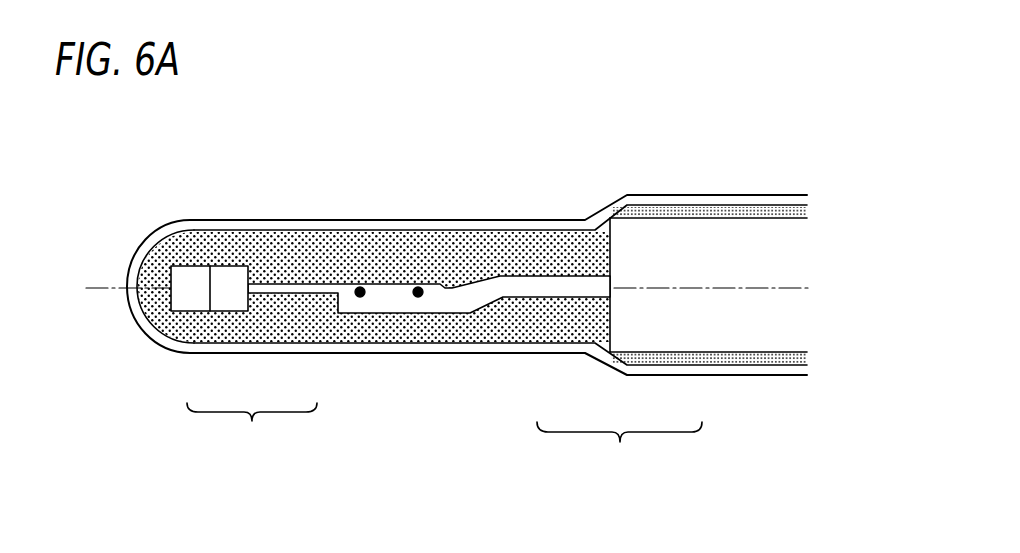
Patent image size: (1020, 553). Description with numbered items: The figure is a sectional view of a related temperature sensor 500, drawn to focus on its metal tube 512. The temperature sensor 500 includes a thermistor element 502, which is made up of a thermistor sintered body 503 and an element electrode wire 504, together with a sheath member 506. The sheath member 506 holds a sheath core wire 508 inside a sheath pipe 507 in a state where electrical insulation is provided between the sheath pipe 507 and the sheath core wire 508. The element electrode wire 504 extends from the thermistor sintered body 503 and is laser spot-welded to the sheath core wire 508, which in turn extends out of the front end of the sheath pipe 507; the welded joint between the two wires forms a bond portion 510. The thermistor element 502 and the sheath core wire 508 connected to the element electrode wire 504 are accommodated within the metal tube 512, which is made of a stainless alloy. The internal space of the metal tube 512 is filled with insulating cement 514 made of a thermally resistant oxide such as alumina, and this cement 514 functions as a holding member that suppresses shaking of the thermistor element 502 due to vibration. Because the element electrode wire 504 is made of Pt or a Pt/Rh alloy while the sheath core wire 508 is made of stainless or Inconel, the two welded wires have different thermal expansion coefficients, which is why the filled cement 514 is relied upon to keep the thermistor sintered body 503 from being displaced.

The temperature sensor 500 is at (195, 188).
The thermistor element 502 is at (252, 427).
The thermistor sintered body 503 is at (200, 303).
The element electrode wire 504 is at (293, 298).
The sheath member 506 is at (619, 446).
The sheath pipe 507 is at (677, 340).
The sheath core wire 508 is at (568, 300).
The bond portion 510 is at (418, 296).
The metal tube 512 is at (445, 228).
The cement 514 is at (335, 246).